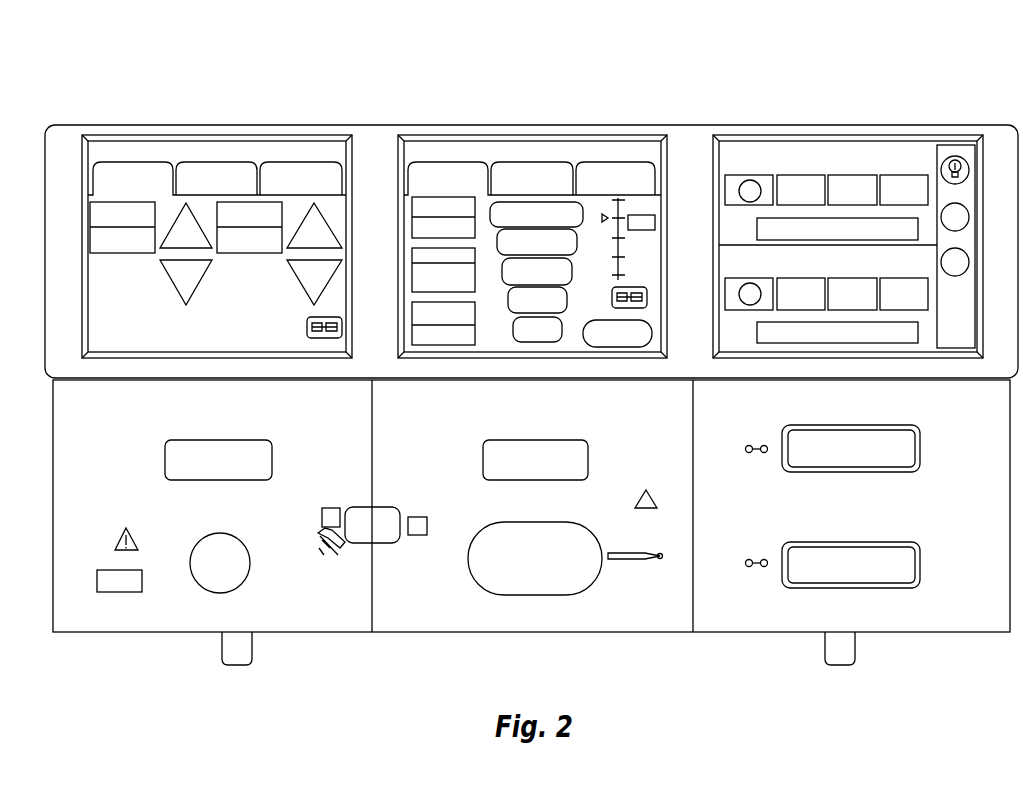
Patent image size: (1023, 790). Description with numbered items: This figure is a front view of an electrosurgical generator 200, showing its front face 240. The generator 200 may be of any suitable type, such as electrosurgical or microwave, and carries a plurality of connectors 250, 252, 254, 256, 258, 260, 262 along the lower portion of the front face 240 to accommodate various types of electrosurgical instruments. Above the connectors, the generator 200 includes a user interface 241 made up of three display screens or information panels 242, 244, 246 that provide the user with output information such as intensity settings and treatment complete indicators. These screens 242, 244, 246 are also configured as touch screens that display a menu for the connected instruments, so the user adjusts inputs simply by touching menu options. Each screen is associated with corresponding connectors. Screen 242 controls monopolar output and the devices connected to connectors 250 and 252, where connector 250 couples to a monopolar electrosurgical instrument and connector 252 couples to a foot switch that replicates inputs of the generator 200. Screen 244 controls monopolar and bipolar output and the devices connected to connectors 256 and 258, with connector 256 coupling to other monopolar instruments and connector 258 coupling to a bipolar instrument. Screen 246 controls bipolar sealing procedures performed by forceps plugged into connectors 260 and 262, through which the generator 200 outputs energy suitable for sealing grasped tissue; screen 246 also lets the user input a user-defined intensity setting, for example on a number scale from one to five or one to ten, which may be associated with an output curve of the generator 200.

The generator 200 is at (884, 78).
The front face 240 is at (400, 125).
The user interface 241 is at (558, 107).
The display screen 242 is at (283, 135).
The display screen 244 is at (525, 133).
The display screen 246 is at (800, 135).
The connector 250 is at (165, 442).
The connector 252 is at (250, 570).
The connector 254 is at (363, 507).
The connector 256 is at (567, 440).
The connector 258 is at (602, 570).
The connector 260 is at (922, 442).
The connector 262 is at (922, 558).